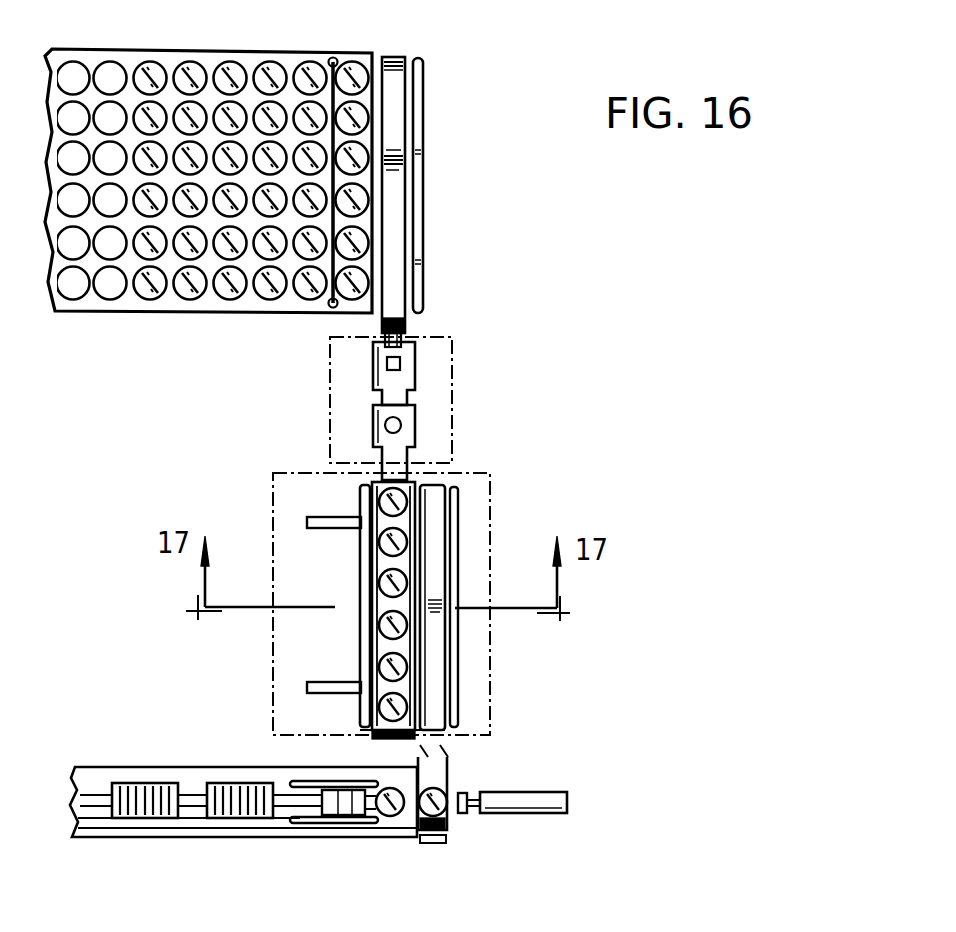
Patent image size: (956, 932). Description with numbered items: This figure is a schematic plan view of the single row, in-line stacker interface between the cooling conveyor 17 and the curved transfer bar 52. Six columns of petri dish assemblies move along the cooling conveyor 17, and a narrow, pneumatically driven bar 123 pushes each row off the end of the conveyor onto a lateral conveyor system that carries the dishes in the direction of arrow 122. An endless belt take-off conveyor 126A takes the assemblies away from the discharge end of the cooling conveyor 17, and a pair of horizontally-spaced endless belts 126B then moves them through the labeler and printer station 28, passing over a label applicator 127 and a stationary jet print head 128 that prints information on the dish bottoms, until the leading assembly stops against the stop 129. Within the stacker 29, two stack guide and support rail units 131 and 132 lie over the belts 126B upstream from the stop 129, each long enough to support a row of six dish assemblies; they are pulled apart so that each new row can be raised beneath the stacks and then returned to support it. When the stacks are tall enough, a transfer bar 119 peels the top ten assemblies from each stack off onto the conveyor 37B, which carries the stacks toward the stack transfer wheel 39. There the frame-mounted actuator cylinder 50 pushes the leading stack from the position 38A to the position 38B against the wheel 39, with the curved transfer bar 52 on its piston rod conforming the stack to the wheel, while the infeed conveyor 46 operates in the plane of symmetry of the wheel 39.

The cooling conveyor 17 is at (143, 312).
The narrow bar 123 is at (337, 59).
The arrow 122 is at (417, 120).
The endless belt take-off conveyor 126A is at (393, 200).
The pair of horizontally-spaced endless belts 126B is at (394, 318).
The labeler and printer station 28 is at (330, 352).
The label applicator 127 is at (415, 365).
The stationary jet print head 128 is at (415, 420).
The stacker 29 is at (273, 710).
The transfer bar 119 is at (360, 640).
The stack guide and support rail unit 131 is at (380, 515).
The stack guide and support rail unit 132 is at (413, 540).
The conveyor 37B is at (433, 673).
The stop 129 is at (390, 738).
The infeed conveyor 46 is at (193, 800).
The stack transfer wheel 39 is at (354, 834).
The stack position against the wheel 38B is at (391, 817).
The stack position at conveyor end 38A is at (441, 794).
The transfer bar 52 is at (470, 811).
The actuator cylinder 50 is at (540, 800).